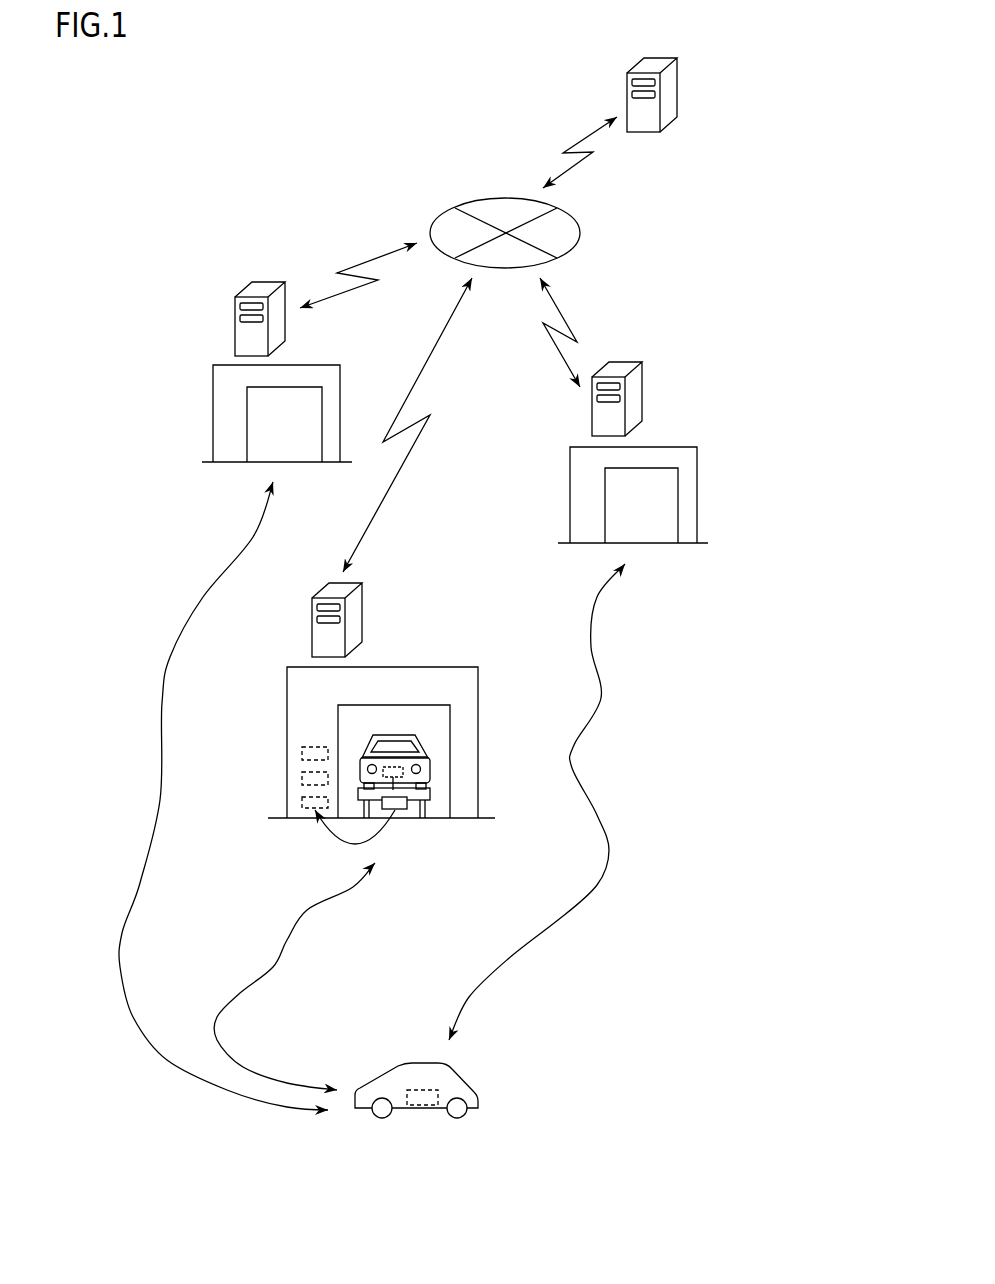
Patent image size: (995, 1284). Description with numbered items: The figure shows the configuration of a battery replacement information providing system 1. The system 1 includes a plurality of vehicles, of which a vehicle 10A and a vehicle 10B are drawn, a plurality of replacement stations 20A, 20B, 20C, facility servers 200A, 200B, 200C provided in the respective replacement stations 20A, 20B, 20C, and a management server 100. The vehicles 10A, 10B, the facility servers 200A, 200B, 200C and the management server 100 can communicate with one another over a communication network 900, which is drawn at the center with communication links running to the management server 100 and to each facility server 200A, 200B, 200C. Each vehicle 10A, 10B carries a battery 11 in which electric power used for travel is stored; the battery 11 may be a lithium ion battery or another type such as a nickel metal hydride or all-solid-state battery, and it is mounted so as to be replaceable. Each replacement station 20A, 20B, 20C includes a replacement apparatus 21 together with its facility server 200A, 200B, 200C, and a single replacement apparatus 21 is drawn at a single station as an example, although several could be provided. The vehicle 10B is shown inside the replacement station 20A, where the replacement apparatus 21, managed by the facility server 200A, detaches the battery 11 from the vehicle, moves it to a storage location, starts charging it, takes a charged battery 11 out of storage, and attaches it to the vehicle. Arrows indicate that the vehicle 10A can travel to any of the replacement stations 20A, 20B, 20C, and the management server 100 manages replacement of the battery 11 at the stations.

The battery replacement information providing system 1 is at (133, 85).
The management server 100 is at (677, 84).
The communication network 900 is at (580, 236).
The facility server 200A is at (363, 606).
The facility server 200B is at (642, 384).
The facility server 200C is at (233, 316).
The replacement station 20A is at (433, 667).
The replacement station 20B is at (697, 460).
The replacement station 20C is at (213, 388).
The vehicle 10A is at (453, 1063).
The vehicle 10B is at (393, 735).
The battery 11 is at (301, 751).
The replacement apparatus 21 is at (433, 797).